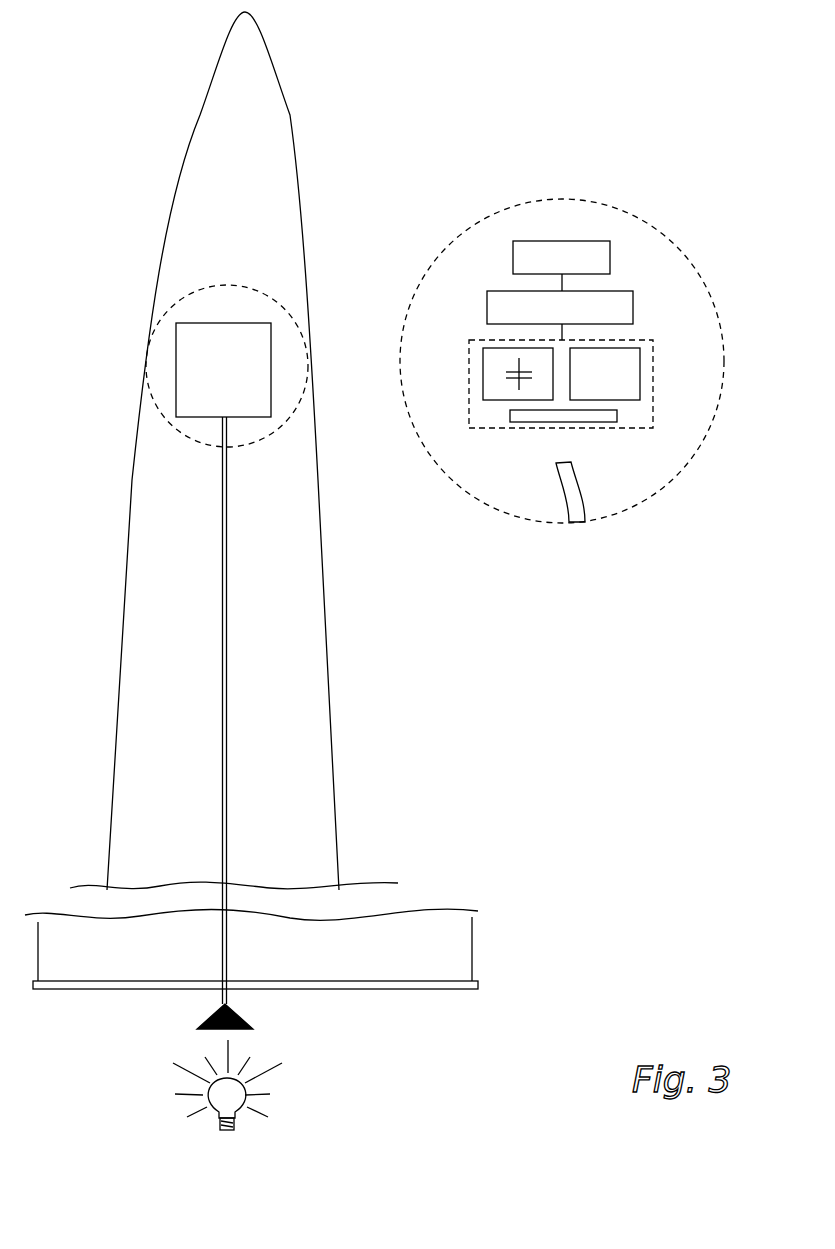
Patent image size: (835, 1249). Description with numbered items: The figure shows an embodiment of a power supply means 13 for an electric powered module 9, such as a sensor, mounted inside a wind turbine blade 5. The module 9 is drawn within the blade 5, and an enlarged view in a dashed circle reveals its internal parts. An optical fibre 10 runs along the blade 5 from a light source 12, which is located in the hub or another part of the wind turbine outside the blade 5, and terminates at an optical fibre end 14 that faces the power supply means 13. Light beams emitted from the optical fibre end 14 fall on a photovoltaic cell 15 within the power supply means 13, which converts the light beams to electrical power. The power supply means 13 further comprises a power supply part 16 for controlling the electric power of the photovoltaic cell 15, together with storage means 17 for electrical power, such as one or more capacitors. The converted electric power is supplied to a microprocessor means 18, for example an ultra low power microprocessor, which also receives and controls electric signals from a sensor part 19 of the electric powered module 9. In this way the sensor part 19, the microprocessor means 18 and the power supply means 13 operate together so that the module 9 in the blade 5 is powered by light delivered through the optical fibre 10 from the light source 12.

The blade 5 is at (540, 789).
The electric powered module 9 is at (200, 360).
The optical fibre 10 is at (222, 570).
The light source 12 is at (190, 1090).
The power supply means 13 is at (470, 408).
The optical fibre end 14 is at (578, 492).
The photovoltaic cell 15 is at (610, 421).
The power supply part 16 is at (633, 365).
The storage means 17 is at (483, 356).
The microprocessor means 18 is at (633, 310).
The sensor part 19 is at (608, 262).